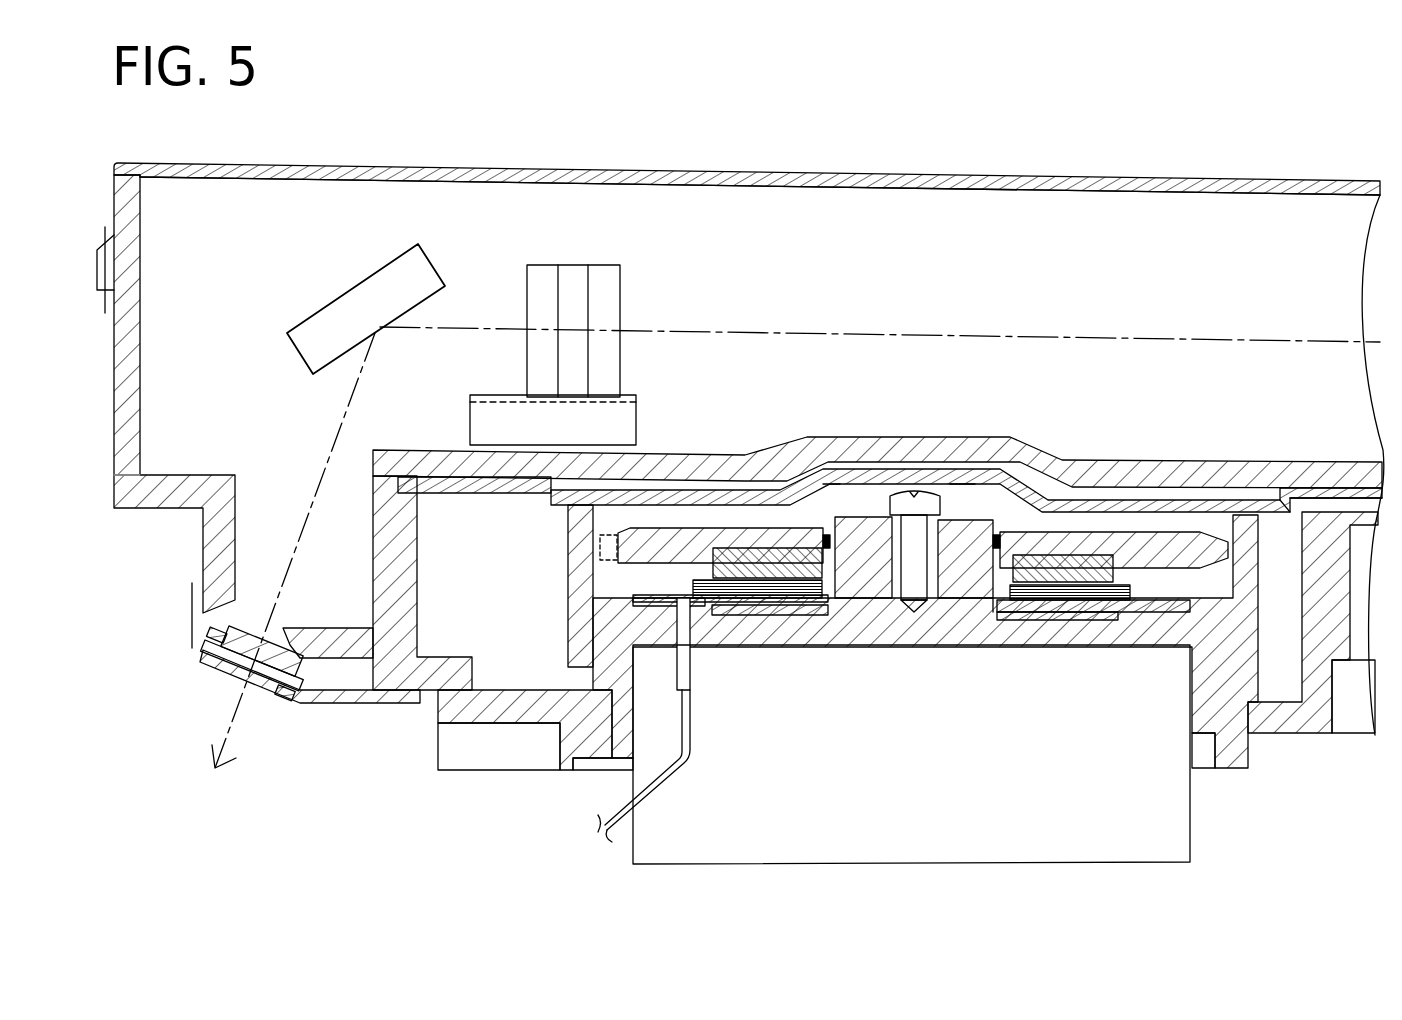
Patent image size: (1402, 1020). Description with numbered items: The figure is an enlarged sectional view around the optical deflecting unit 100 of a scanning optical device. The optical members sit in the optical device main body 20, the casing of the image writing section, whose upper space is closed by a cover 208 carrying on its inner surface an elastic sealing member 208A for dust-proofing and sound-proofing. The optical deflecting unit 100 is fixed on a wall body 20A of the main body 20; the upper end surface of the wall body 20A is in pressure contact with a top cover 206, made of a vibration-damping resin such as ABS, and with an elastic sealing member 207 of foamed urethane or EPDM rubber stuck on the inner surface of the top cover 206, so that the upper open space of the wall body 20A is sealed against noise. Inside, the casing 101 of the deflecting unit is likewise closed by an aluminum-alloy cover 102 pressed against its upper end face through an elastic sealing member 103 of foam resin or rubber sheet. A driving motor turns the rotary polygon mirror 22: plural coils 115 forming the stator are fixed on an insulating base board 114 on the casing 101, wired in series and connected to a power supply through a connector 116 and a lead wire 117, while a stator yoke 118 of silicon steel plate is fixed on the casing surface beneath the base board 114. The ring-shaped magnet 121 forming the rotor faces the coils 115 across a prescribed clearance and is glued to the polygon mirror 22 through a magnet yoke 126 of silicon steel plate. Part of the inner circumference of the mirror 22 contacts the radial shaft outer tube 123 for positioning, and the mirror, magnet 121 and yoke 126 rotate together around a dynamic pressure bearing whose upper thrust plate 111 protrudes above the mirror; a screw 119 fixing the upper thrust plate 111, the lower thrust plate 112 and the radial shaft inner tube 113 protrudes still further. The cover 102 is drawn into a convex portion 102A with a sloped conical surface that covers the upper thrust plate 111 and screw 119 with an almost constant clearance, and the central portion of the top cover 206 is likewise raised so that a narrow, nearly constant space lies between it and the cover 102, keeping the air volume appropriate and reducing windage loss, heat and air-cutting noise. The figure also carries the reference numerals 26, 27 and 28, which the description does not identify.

The cover 208 is at (668, 165).
The elastic sealing member 208A is at (803, 186).
The optical device main body 20 is at (150, 355).
The wall body 20A is at (367, 527).
The reflecting mirror 27 is at (325, 300).
The f-theta lens 26 is at (605, 265).
The top cover 206 is at (737, 450).
The elastic sealing member 207 is at (442, 497).
The elastic sealing member 103 is at (557, 505).
The cover 102 is at (1130, 470).
The convex portion 102A is at (1060, 490).
The screw 119 is at (826, 485).
The upper thrust plate 111 is at (960, 515).
The optical deflecting unit 100 is at (888, 425).
The casing 101 is at (567, 547).
The insulating base board 114 is at (573, 642).
The rotary polygon mirror 22 is at (1200, 540).
The magnet yoke 126 is at (718, 545).
The magnet 121 is at (700, 575).
The coil 115 is at (630, 600).
The lower thrust plate 112 is at (970, 600).
The radial shaft inner tube 113 is at (927, 613).
The radial shaft outer tube 123 is at (990, 603).
The stator yoke 118 is at (793, 613).
The connector 116 is at (692, 672).
The lead wire 117 is at (693, 745).
The dustproof glass 28 is at (200, 628).